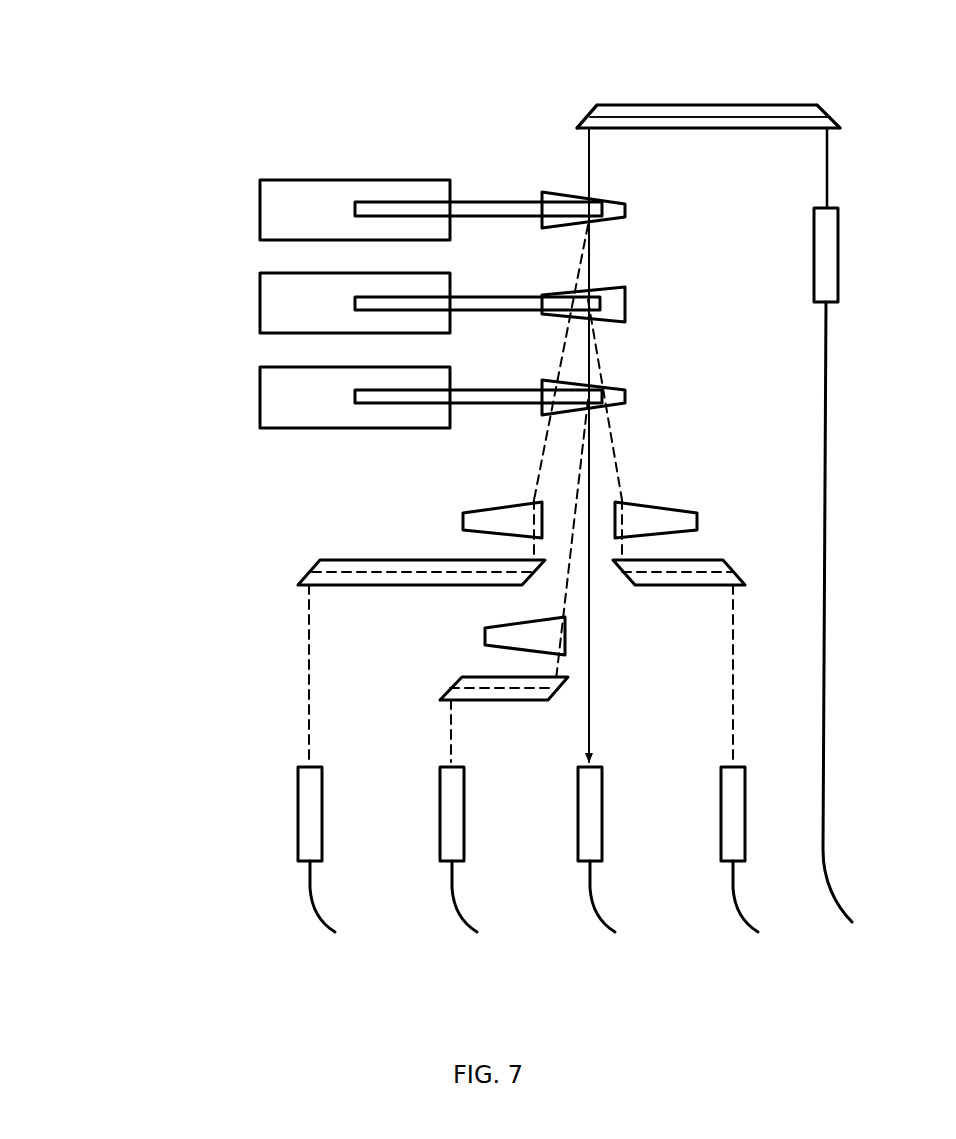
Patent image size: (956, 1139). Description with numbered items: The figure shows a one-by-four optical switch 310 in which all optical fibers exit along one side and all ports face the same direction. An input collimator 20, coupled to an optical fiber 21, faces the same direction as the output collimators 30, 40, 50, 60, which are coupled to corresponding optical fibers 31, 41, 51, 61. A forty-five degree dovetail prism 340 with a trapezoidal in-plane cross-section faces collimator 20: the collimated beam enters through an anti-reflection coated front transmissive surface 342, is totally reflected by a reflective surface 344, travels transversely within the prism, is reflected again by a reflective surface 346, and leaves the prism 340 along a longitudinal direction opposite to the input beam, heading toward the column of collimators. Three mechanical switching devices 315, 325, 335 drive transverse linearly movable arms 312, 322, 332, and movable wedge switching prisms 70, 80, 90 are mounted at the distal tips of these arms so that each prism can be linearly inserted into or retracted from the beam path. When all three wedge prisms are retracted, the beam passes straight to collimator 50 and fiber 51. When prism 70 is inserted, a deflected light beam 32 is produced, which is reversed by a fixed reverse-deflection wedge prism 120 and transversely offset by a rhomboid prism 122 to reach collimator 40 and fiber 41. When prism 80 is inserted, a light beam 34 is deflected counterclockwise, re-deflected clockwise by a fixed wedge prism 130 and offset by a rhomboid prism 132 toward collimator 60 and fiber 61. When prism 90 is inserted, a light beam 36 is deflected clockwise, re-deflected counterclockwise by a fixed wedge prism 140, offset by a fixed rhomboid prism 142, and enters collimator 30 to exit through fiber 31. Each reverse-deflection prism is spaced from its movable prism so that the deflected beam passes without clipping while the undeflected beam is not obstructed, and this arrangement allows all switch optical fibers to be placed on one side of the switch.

The optical switch 310 is at (118, 572).
The dovetail prism 340 is at (707, 90).
The front transmissive surface 342 is at (782, 130).
The reflective surface 344 is at (833, 120).
The reflective surface 346 is at (597, 110).
The input collimator 20 is at (838, 255).
The optical fiber 21 is at (824, 392).
The mechanical switching device 335 is at (260, 212).
The mechanical switching device 325 is at (260, 305).
The mechanical switching device 315 is at (260, 397).
The linearly movable arm 332 is at (488, 203).
The linearly movable arm 322 is at (488, 298).
The linearly movable arm 312 is at (488, 390).
The wedge switching prism 90 is at (626, 210).
The wedge switching prism 80 is at (626, 303).
The wedge switching prism 70 is at (627, 398).
The light beam 34 is at (615, 443).
The deflected light beam 32 is at (558, 606).
The light beam 36 is at (308, 672).
The reverse-deflection wedge prism 140 is at (463, 520).
The reverse-deflection wedge prism 130 is at (700, 520).
The reverse-deflection wedge prism 120 is at (485, 637).
The rhomboid prism 142 is at (382, 560).
The rhomboid prism 132 is at (732, 565).
The rhomboid prism 122 is at (468, 703).
The output collimator 30 is at (298, 815).
The optical fiber 31 is at (313, 912).
The output collimator 40 is at (440, 815).
The optical fiber 41 is at (455, 912).
The output collimator 50 is at (578, 815).
The optical fiber 51 is at (593, 912).
The output collimator 60 is at (721, 810).
The optical fiber 61 is at (736, 906).